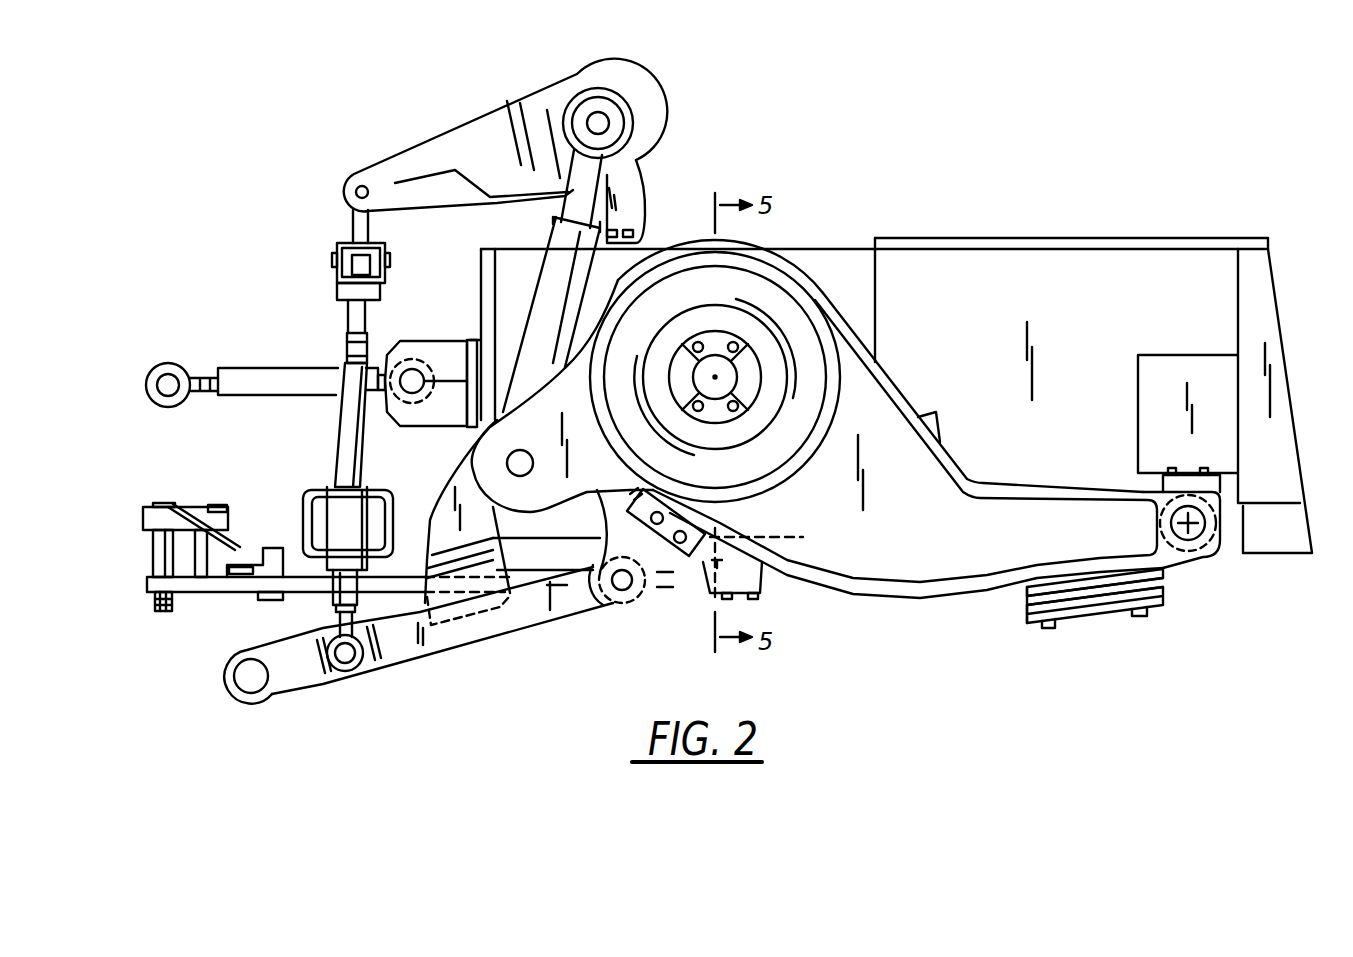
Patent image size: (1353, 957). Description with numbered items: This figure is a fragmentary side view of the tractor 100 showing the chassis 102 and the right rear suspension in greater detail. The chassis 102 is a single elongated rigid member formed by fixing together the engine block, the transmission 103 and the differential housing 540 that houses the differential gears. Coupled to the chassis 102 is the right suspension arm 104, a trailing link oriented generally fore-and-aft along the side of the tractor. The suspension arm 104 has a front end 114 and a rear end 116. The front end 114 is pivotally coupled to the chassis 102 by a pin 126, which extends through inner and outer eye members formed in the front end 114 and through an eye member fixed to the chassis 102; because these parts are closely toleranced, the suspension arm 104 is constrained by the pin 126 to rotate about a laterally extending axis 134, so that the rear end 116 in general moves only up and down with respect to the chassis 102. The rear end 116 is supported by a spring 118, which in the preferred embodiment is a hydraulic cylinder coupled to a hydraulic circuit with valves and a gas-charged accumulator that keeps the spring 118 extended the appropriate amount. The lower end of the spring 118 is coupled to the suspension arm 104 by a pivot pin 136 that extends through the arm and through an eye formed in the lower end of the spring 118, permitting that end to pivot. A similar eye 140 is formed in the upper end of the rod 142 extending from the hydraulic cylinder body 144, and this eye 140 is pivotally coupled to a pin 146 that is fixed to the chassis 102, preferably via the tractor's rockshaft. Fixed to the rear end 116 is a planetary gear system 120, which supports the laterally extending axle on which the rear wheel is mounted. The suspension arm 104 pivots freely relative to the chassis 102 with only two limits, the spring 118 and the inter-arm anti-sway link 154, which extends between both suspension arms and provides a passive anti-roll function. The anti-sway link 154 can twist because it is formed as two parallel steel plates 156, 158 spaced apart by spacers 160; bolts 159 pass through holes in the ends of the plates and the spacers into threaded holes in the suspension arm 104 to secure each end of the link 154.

The tractor 100 is at (927, 155).
The chassis 102 is at (853, 247).
The transmission 103 is at (1117, 236).
The right suspension arm 104 is at (873, 573).
The front end 114 is at (1170, 557).
The rear end 116 is at (493, 447).
The spring 118 is at (550, 268).
The planetary gear system 120 is at (777, 472).
The pin 126 is at (1193, 537).
The axis 134 is at (1184, 519).
The pivot pin 136 is at (522, 473).
The eye 140 is at (617, 110).
The rod 142 is at (600, 160).
The hydraulic cylinder body 144 is at (545, 293).
The pin 146 is at (585, 116).
The anti-sway link 154 is at (1020, 610).
The steel plate 156 is at (1077, 600).
The steel plate 158 is at (1037, 584).
The bolts 159 is at (1047, 628).
The spacers 160 is at (1053, 594).
The differential housing 540 is at (797, 260).